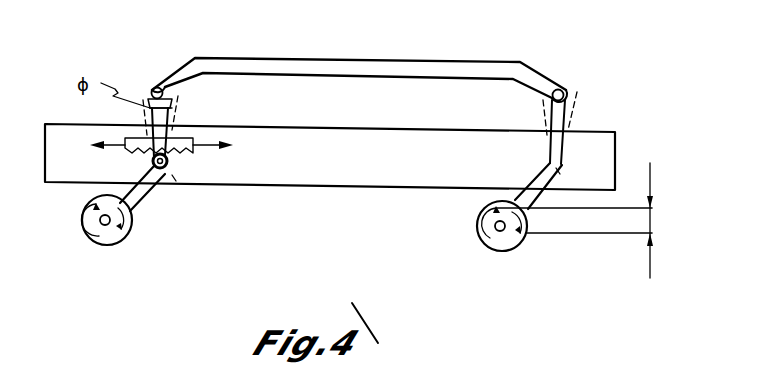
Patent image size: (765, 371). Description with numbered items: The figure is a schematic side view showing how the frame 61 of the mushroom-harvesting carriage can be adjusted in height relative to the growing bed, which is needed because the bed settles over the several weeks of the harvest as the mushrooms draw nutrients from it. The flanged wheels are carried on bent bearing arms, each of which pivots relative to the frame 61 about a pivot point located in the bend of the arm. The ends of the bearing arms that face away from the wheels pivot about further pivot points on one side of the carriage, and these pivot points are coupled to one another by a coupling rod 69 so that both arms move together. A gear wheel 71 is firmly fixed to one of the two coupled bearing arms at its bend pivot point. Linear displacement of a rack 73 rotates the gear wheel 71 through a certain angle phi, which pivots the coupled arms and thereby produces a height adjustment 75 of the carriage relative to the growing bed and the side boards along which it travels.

The frame 61 is at (367, 145).
The coupling rod 69 is at (359, 56).
The gear wheel 71 is at (181, 226).
The rack 73 is at (187, 61).
The height adjustment 75 is at (654, 223).